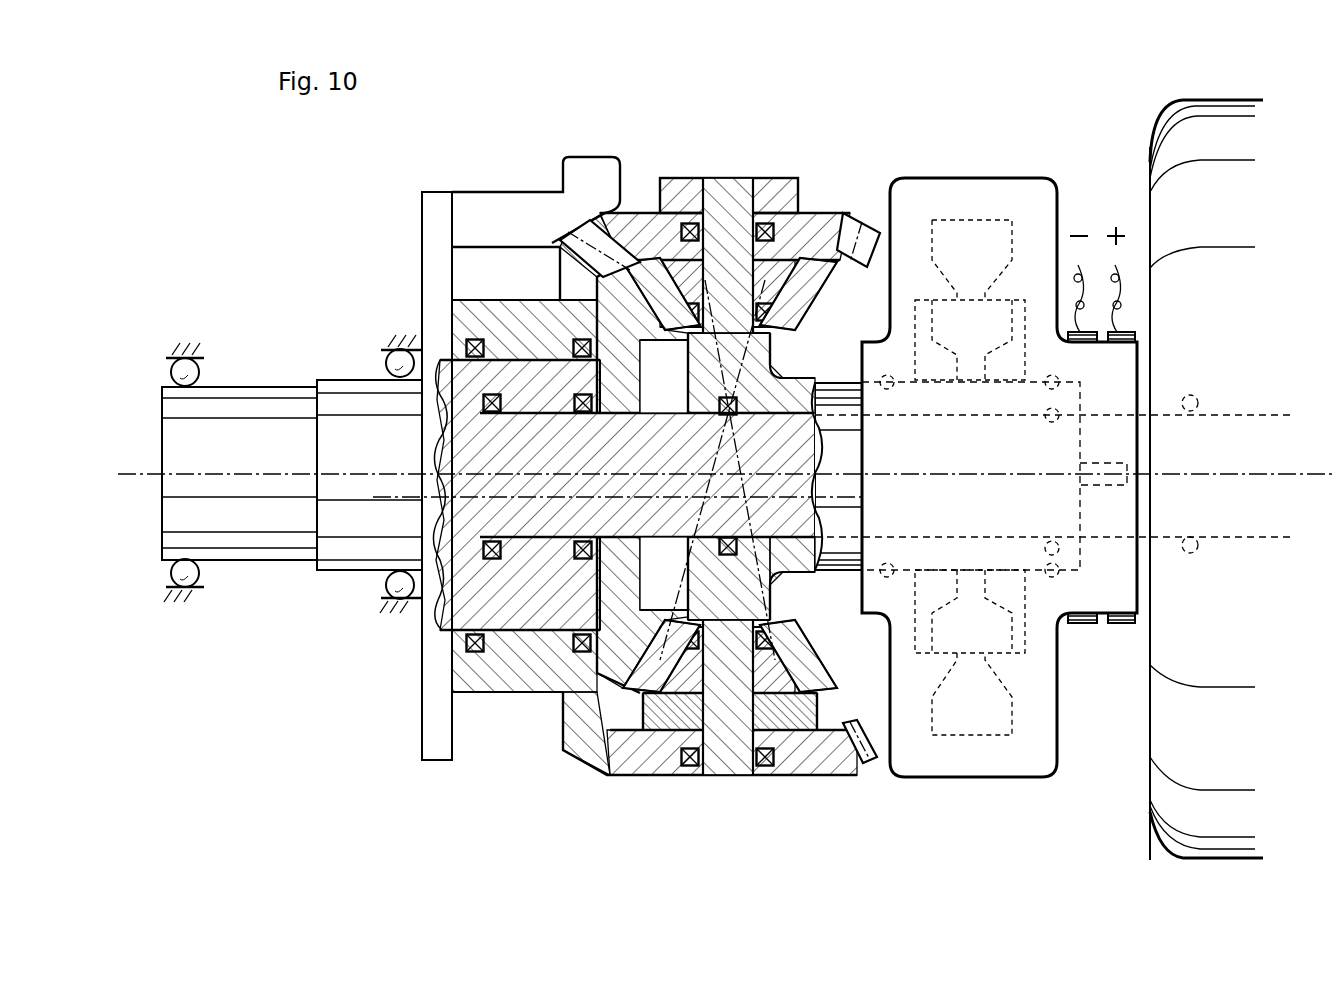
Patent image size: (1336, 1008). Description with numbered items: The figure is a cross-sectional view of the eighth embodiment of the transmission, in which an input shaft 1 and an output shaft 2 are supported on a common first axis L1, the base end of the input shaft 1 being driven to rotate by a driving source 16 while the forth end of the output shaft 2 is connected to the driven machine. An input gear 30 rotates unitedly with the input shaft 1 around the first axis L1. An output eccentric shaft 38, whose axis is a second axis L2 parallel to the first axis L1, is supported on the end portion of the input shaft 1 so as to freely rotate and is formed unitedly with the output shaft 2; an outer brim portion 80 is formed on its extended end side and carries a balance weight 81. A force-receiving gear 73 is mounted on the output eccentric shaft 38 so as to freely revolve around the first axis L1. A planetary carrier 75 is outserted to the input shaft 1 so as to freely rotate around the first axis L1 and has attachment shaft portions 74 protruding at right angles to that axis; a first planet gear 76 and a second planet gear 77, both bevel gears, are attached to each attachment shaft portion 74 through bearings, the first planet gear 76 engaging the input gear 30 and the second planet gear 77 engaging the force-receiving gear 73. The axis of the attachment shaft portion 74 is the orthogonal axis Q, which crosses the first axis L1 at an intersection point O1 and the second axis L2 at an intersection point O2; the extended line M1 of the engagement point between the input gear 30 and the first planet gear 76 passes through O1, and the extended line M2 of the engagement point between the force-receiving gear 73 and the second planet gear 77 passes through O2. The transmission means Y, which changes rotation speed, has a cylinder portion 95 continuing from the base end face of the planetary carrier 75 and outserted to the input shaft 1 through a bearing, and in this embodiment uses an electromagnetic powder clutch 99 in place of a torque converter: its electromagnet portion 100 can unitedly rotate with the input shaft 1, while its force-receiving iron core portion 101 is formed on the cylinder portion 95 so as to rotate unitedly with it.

The output shaft 2 is at (244, 386).
The first axis L1 is at (243, 480).
The second axis L2 is at (413, 500).
The outer brim portion 80 is at (422, 250).
The balance weight 81 is at (597, 157).
The force-receiving gear 73 is at (567, 231).
The output eccentric shaft 38 is at (533, 663).
The input gear 30 is at (579, 730).
The input shaft 1 is at (793, 418).
The attachment shaft portion 74 is at (735, 178).
The orthogonal axis Q is at (730, 207).
The first planet gear 76 is at (680, 257).
The second planet gear 77 is at (637, 215).
The extended line of engagement point M1 is at (724, 428).
The extended line of engagement point M2 is at (730, 455).
The intersection point O1 is at (730, 472).
The intersection point O2 is at (730, 479).
The planetary carrier 75 is at (810, 560).
The electromagnet portion 100 is at (951, 175).
The electromagnetic powder clutch 99 is at (1015, 158).
The transmission means Y is at (1094, 153).
The force-receiving iron core portion 101 is at (995, 315).
The cylinder portion 95 is at (1028, 605).
The driving source 16 is at (1145, 781).